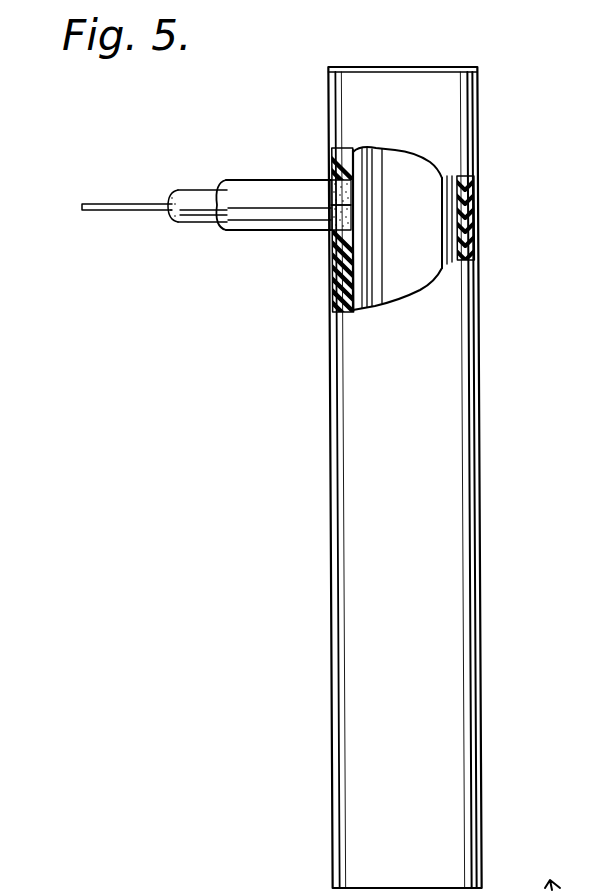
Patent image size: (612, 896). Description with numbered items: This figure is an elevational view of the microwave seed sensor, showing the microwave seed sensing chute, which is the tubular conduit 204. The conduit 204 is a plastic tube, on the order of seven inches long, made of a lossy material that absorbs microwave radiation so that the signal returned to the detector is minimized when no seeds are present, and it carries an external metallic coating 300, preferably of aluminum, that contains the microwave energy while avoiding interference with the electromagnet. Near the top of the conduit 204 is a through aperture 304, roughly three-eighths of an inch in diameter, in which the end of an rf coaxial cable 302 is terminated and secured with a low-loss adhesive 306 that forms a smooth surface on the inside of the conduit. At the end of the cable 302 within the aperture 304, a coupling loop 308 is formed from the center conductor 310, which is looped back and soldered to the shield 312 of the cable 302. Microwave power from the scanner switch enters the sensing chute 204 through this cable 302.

The tubular conduit 204 is at (330, 305).
The external metallic coating 300 is at (330, 270).
The rf coaxial transmission line or cable 302 is at (282, 148).
The through aperture 304 is at (352, 228).
The adhesive 306 is at (332, 224).
The coupling loop 308 is at (352, 199).
The center conductor 310 is at (150, 212).
The shield 312 is at (226, 222).